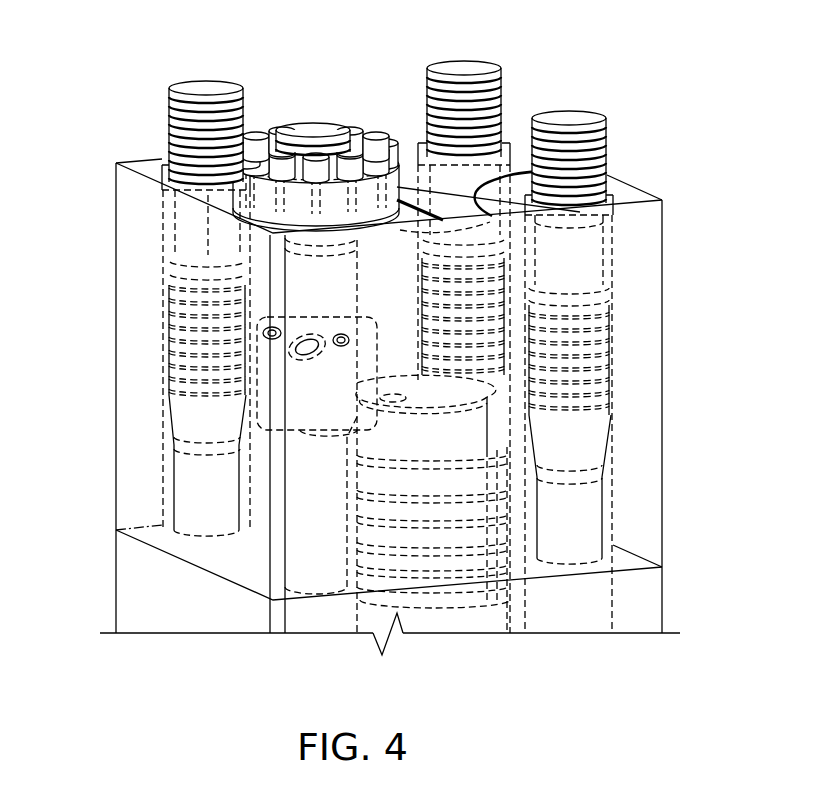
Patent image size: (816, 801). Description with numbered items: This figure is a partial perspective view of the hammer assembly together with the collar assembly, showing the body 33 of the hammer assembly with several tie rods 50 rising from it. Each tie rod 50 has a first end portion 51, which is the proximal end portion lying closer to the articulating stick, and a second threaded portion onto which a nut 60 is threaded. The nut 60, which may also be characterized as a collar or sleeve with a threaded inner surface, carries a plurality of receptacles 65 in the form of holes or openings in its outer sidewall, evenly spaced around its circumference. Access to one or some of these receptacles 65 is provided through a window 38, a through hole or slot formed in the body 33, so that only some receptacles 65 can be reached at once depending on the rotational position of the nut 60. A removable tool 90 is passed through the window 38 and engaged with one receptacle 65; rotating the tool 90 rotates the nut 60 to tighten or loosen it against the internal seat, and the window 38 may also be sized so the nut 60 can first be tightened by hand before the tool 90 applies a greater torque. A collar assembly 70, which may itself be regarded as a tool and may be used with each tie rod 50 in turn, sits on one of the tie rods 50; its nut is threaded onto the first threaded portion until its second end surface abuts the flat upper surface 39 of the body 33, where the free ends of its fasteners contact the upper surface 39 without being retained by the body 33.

The body 33 is at (116, 528).
The window 38 is at (262, 312).
The upper surface 39 is at (147, 165).
The tie rod 50 is at (216, 86).
The first end portion 51 is at (512, 105).
The nut 60 is at (322, 395).
The receptacle 65 is at (348, 342).
The collar assembly 70 is at (345, 95).
The tool 90 is at (262, 352).